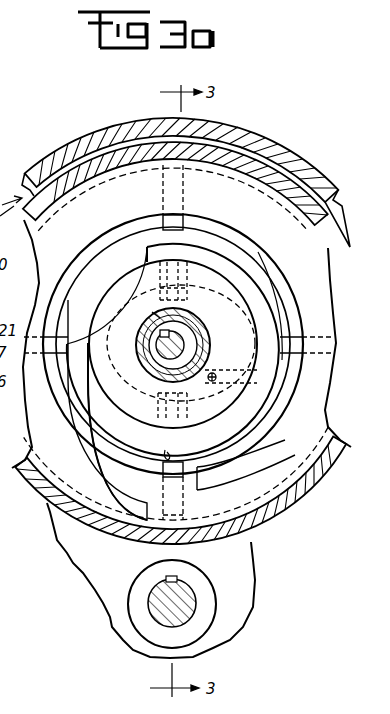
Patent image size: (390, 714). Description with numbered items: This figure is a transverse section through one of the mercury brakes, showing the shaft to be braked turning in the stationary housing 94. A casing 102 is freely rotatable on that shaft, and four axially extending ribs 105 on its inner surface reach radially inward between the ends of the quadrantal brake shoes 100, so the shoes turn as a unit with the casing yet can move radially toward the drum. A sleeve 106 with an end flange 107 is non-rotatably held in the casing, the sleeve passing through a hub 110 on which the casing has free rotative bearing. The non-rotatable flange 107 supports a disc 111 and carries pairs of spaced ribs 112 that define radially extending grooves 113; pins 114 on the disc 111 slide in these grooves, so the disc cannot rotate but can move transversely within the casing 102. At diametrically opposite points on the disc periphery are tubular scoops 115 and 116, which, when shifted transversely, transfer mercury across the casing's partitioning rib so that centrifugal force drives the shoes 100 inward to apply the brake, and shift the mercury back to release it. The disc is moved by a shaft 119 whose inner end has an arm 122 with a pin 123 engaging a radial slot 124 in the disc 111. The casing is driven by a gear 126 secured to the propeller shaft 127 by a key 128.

The stationary housing 94 is at (272, 146).
The quadrantal brake shoes 100 is at (92, 257).
The casing 102 is at (60, 194).
The axially extending ribs 105 is at (192, 175).
The sleeve 106 is at (139, 344).
The flange 107 is at (213, 434).
The hub 110 is at (142, 332).
The disc 111 is at (161, 446).
The ribs 112 is at (192, 323).
The radially extending grooves 113 is at (180, 261).
The pins 114 is at (143, 309).
The tubular scoop 115 is at (76, 452).
The tubular scoop 116 is at (236, 463).
The shaft 119 is at (146, 362).
The arm 122 is at (210, 348).
The pin 123 is at (210, 383).
The radial slot 124 is at (193, 406).
The gear 126 is at (205, 616).
The propeller shaft 127 is at (190, 600).
The key 128 is at (178, 578).